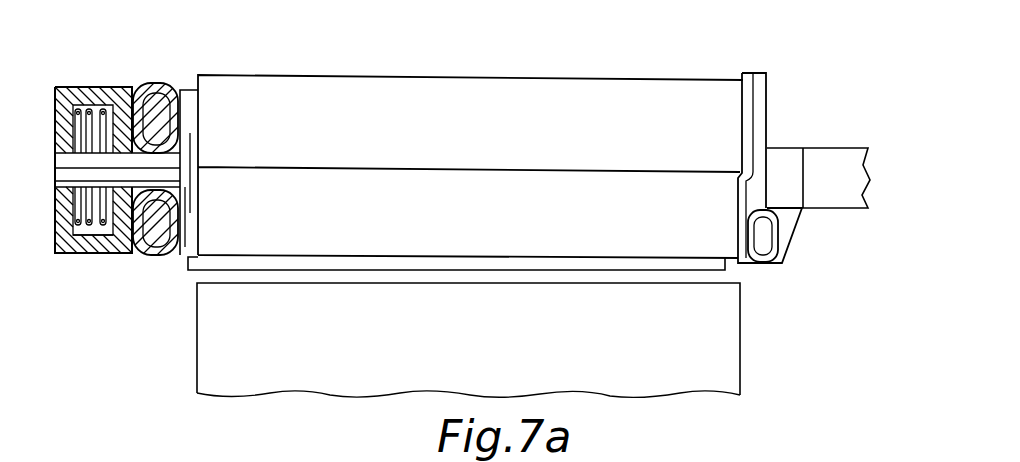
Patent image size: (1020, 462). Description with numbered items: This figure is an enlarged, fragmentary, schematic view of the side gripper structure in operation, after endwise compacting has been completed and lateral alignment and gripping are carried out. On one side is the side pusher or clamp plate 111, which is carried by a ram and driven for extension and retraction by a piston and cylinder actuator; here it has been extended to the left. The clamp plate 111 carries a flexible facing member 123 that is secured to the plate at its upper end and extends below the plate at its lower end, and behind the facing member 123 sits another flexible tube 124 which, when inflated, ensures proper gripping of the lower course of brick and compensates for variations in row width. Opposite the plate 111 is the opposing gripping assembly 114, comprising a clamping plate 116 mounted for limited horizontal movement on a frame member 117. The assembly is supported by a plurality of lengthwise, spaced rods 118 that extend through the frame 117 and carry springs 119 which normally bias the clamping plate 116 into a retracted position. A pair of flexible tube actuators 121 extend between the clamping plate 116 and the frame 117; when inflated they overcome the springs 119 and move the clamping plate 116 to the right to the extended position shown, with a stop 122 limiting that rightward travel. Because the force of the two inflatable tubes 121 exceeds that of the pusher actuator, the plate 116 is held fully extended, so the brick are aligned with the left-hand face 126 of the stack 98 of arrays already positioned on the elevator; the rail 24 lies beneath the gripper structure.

The stop 122 is at (63, 90).
The opposing gripping assembly 114 is at (110, 74).
The springs 119 is at (72, 236).
The frame member 117 is at (115, 255).
The rods 118 is at (168, 166).
The flexible tube actuators 121 is at (165, 80).
The clamping plate 116 is at (193, 90).
The rail 24 is at (655, 270).
The flexible facing member 123 is at (747, 73).
The side pusher 111 is at (767, 107).
The flexible tube 124 is at (765, 263).
The left-hand face 126 is at (197, 317).
The stack 98 is at (497, 351).